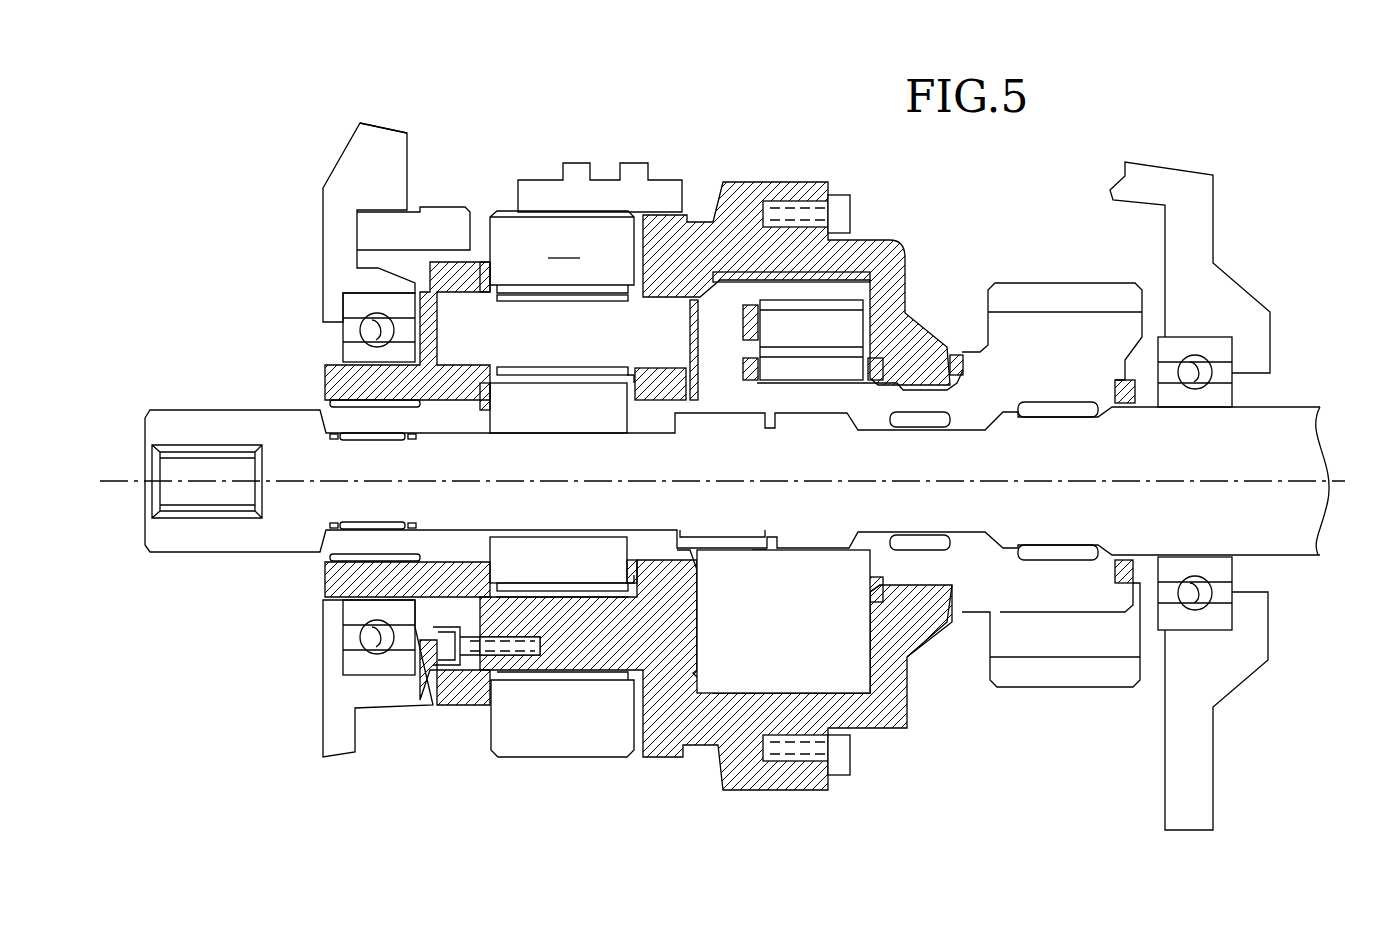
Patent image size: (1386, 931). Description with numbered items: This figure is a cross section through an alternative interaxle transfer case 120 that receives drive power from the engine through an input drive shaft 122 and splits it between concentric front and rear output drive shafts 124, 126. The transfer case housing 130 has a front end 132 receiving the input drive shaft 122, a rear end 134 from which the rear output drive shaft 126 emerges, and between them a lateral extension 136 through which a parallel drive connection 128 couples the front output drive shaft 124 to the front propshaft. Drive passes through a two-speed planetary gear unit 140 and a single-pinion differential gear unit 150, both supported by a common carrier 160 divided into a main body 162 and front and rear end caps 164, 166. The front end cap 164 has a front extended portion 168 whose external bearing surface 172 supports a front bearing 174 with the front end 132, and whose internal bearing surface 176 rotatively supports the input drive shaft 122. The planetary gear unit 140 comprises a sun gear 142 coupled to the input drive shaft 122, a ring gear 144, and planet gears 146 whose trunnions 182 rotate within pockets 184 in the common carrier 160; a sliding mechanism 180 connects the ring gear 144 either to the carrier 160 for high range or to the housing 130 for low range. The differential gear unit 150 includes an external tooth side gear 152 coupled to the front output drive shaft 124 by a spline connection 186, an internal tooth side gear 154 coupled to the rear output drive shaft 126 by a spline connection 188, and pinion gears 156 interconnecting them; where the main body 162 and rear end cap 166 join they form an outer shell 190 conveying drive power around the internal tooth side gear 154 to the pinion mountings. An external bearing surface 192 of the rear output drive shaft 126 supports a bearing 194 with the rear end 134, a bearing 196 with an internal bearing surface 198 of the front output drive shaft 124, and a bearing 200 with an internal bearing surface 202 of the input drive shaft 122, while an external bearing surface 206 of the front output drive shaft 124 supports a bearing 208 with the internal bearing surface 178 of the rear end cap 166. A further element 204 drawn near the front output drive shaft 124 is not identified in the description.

The interaxle transfer case 120 is at (416, 92).
The input drive shaft 122 is at (215, 420).
The front output drive shaft 124 is at (940, 563).
The rear output drive shaft 126 is at (1242, 447).
The parallel drive connection 128 is at (1075, 290).
The transfer case housing 130 is at (407, 160).
The front end 132 is at (323, 262).
The rear end 134 is at (1213, 250).
The lateral extension 136 is at (1125, 178).
The two-speed planetary gear unit 140 is at (495, 212).
The sun gear 142 is at (566, 417).
The ring gear 144 is at (578, 727).
The planet gears 146 is at (568, 350).
The single-pinion differential gear unit 150 is at (860, 262).
The external tooth side gear 152 is at (800, 375).
The internal tooth side gear 154 is at (737, 572).
The pinion gears 156 is at (830, 340).
The common carrier 160 is at (770, 182).
The main body 162 is at (718, 765).
The front end cap 164 is at (452, 700).
The rear end cap 166 is at (905, 712).
The front extended portion 168 is at (340, 385).
The external bearing surface 172 is at (362, 640).
The front bearing 174 is at (362, 330).
The internal bearing surface 176 is at (330, 553).
The internal bearing surface 178 is at (955, 395).
The sliding mechanism 180 is at (590, 165).
The trunnions 182 is at (492, 294).
The pockets 184 is at (655, 310).
The spline connection 186 is at (810, 388).
The spline connection 188 is at (740, 530).
The outer shell 190 is at (838, 790).
The external bearing surface 192 is at (1290, 557).
The bearing 194 is at (1200, 372).
The bearing 196 is at (1060, 418).
The internal bearing surface 198 is at (955, 435).
The bearing 200 is at (380, 437).
The internal bearing surface 202 is at (500, 530).
The seal 204 is at (915, 543).
The external bearing surface 206 is at (945, 615).
The bearing 208 is at (965, 570).